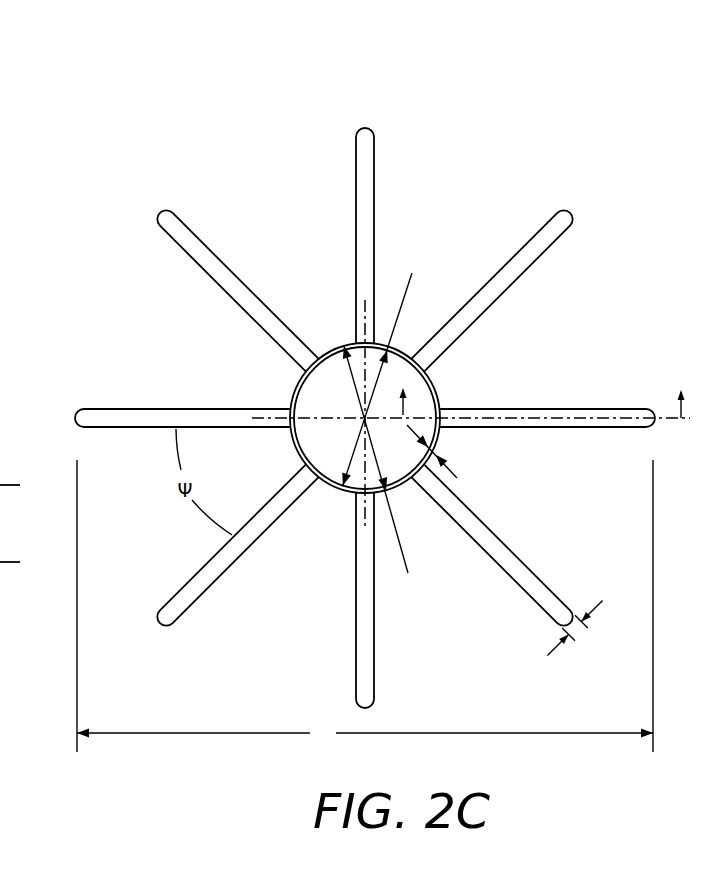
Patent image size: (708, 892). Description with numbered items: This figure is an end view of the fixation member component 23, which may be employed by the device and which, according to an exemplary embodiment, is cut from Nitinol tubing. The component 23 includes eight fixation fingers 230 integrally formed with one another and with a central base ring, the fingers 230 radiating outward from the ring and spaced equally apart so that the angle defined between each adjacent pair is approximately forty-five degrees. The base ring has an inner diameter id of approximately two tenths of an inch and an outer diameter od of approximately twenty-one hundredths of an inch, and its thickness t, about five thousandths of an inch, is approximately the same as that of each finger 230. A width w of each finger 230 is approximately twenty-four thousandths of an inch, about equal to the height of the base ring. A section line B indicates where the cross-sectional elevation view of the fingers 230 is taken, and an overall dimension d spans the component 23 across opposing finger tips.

The fixation member component 23 is at (331, 374).
The fixation fingers 230 is at (330, 167).
The inner diameter id is at (412, 273).
The outer diameter od is at (408, 573).
The thickness t is at (434, 451).
The width w is at (563, 631).
The section line B- B is at (542, 392).
The overall diameter d is at (365, 606).